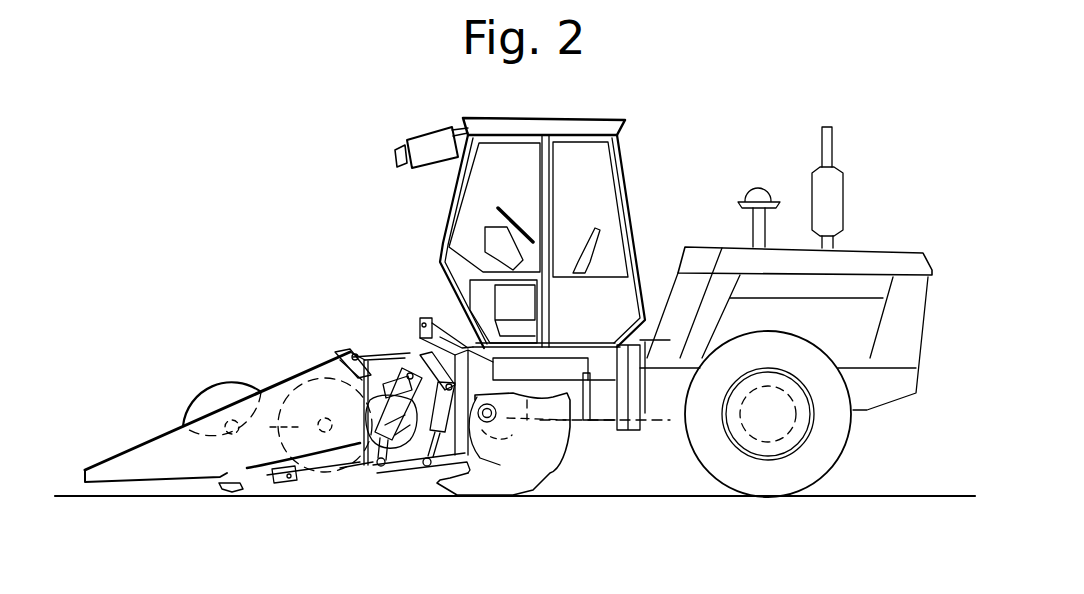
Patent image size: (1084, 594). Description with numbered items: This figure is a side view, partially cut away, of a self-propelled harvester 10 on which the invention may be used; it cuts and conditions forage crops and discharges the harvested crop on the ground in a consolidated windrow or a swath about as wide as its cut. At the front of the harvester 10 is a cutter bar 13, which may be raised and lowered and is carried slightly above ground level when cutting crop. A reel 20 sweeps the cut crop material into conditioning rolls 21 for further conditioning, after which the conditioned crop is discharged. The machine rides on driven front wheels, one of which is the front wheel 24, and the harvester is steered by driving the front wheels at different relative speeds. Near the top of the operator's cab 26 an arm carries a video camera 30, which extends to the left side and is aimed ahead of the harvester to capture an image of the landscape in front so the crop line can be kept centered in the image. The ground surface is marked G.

The harvester 10 is at (238, 347).
The cutter bar 13 is at (228, 497).
The reel 20 is at (190, 408).
The conditioning rolls 21 is at (312, 392).
The front wheel 24 is at (568, 457).
The operator's cab 26 is at (627, 203).
The video camera 30 is at (432, 137).
The ground G is at (887, 496).